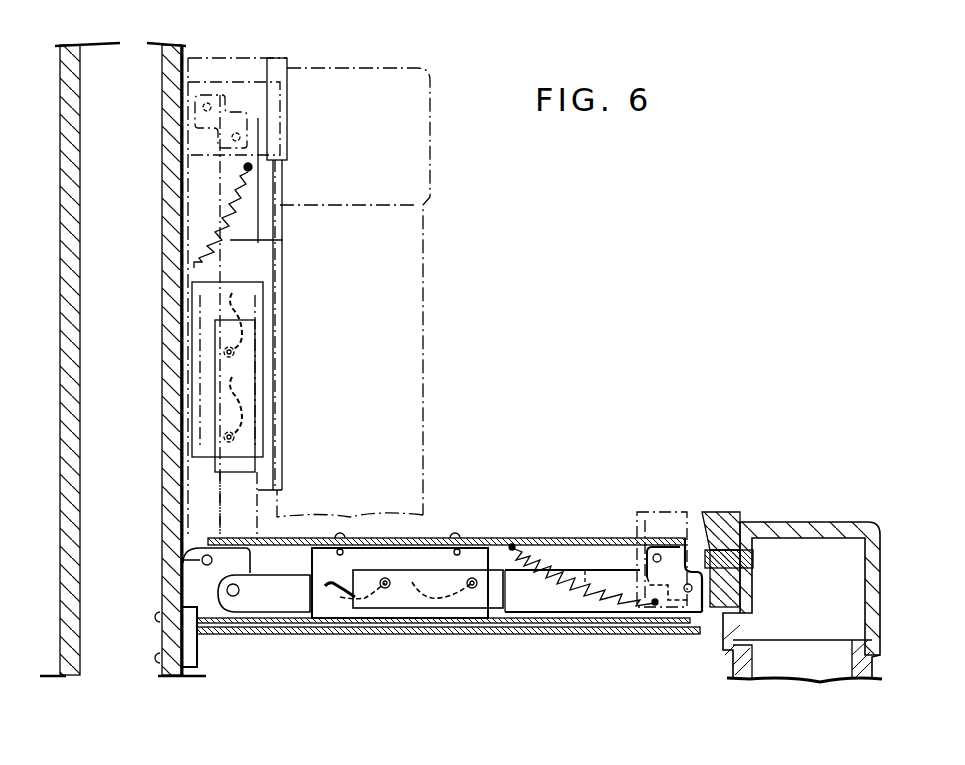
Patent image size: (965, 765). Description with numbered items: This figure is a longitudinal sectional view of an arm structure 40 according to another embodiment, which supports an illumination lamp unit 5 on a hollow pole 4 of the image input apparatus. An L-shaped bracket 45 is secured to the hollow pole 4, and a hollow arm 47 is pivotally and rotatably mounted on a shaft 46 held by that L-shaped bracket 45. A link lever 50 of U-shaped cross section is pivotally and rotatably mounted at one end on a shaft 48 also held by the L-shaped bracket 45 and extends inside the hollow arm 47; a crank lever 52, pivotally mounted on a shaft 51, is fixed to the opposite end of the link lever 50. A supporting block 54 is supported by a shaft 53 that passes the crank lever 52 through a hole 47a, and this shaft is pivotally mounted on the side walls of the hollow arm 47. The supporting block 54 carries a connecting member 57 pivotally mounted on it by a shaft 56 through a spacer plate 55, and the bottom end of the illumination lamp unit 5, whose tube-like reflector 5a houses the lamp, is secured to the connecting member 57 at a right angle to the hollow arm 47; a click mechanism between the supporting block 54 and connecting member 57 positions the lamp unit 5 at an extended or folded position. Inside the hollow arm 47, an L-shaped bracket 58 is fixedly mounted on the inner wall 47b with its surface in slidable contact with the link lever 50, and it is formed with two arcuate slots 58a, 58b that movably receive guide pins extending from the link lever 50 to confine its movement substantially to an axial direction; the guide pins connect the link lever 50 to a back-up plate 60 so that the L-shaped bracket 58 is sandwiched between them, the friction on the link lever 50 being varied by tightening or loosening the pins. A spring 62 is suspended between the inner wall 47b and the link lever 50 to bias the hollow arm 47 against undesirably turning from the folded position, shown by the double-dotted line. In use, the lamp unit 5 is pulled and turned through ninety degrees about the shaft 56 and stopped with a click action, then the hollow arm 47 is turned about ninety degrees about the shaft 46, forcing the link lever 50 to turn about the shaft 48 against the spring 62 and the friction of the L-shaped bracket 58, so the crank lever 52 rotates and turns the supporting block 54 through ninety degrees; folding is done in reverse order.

The hollow pole 4 is at (195, 676).
The illumination lamp unit 5 is at (433, 293).
The tube-like reflector 5a is at (882, 673).
The arm structure 40 is at (502, 536).
The L-shaped bracket 45 is at (200, 650).
The shaft 46 is at (203, 543).
The hollow arm 47 is at (553, 545).
The hole 47a is at (647, 567).
The inner wall 47b is at (587, 590).
The shaft 48 is at (240, 590).
The link lever 50 is at (280, 242).
The shaft 51 is at (689, 593).
The crank lever 52 is at (211, 93).
The shaft 53 is at (655, 557).
The supporting block 54 is at (712, 512).
The spacer plate 55 is at (740, 522).
The shaft 56 is at (755, 560).
The connecting member 57 is at (882, 594).
The L-shaped bracket 58 is at (263, 330).
The arcuate slot 58a is at (245, 403).
The arcuate slot 58b is at (263, 293).
The back-up plate 60 is at (245, 372).
The spring 62 is at (263, 197).